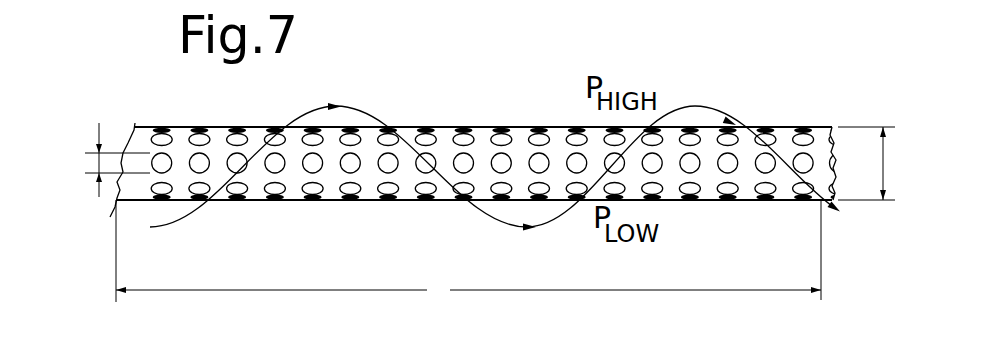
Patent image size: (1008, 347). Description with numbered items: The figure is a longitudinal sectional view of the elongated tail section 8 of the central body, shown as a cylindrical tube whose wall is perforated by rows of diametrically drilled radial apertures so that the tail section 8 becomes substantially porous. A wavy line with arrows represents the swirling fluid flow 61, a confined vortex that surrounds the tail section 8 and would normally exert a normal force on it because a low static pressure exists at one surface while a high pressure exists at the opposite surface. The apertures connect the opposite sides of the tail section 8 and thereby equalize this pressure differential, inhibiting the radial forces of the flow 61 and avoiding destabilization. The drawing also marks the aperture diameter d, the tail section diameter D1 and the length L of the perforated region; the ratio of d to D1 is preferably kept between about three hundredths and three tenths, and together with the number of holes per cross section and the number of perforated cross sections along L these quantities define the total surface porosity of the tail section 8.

The elongated tail section 8 is at (483, 128).
The swirling fluid flow 61 is at (366, 113).
The diameter of the aperture d is at (97, 161).
The diameter of the tail section D1 is at (866, 163).
The length scale L is at (468, 252).